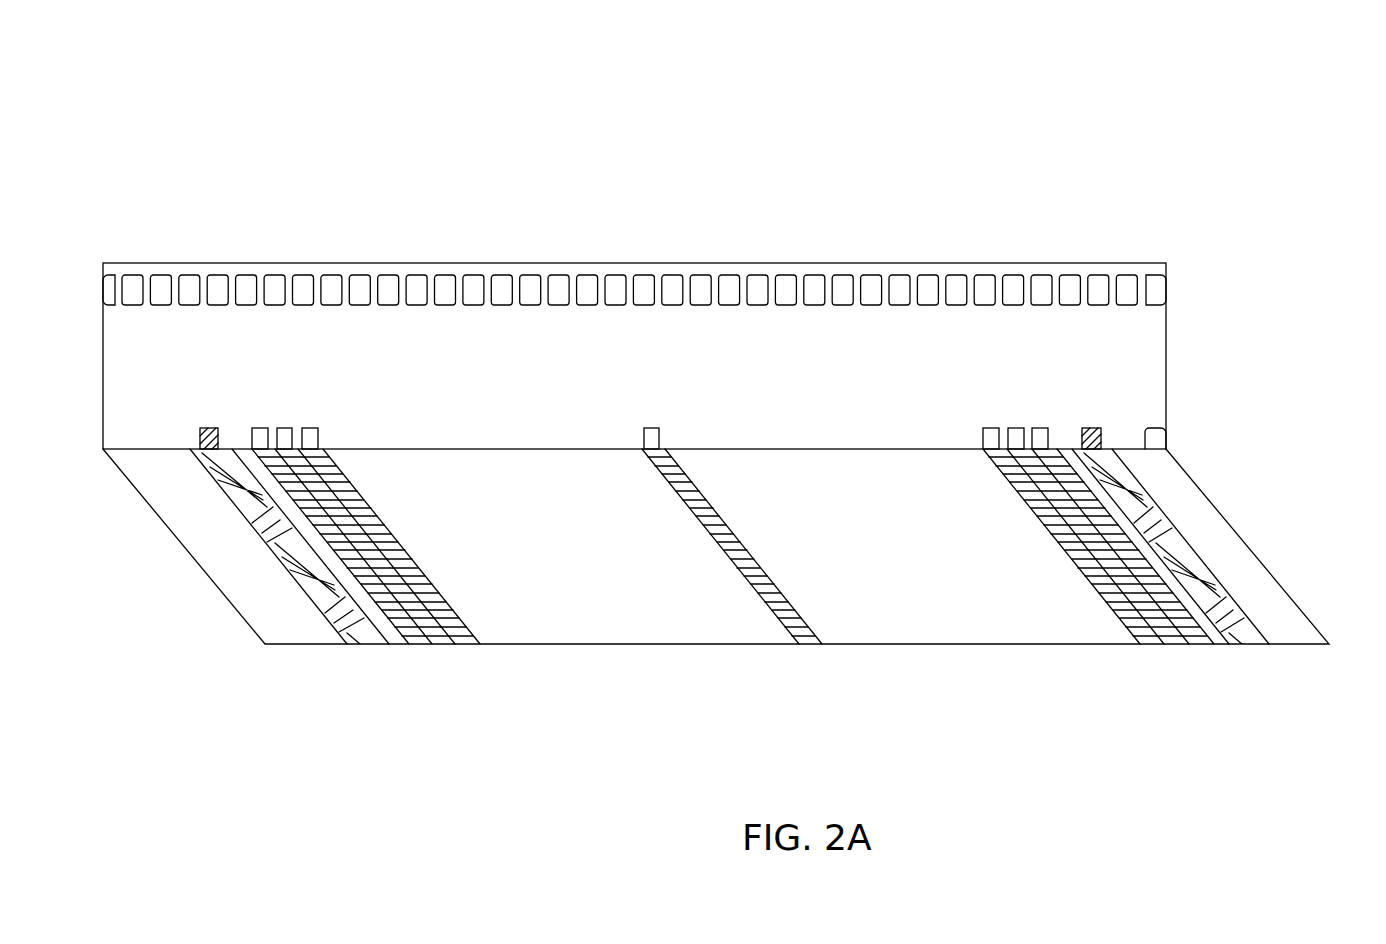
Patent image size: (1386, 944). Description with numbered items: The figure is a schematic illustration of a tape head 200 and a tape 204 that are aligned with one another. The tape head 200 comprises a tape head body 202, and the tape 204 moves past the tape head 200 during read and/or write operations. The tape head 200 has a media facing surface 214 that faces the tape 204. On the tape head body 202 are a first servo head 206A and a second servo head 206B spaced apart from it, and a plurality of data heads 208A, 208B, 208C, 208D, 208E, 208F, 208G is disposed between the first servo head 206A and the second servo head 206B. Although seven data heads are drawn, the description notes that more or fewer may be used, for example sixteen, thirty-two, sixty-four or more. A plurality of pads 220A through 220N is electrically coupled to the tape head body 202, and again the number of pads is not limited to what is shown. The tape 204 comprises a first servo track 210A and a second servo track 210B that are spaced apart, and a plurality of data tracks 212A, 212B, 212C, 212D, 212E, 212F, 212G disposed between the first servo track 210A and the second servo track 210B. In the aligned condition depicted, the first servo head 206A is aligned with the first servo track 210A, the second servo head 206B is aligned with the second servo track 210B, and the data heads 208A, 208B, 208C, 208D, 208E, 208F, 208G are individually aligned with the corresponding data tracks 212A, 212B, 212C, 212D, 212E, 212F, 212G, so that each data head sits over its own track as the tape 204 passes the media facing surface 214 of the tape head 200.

The tape head 200 is at (207, 90).
The tape head body 202 is at (1168, 342).
The tape 204 is at (1268, 565).
The first servo head 206A is at (205, 427).
The second servo head 206B is at (1091, 427).
The data head 208A is at (258, 427).
The data head 208B is at (290, 427).
The data head 208C is at (318, 440).
The data head 208D is at (652, 427).
The data head 208E is at (983, 440).
The data head 208F is at (1012, 427).
The data head 208G is at (1040, 427).
The first servo track 210A is at (373, 648).
The second servo track 210B is at (1255, 648).
The data track 212A is at (425, 648).
The data track 212B is at (455, 648).
The data track 212C is at (480, 648).
The data track 212D is at (810, 648).
The data track 212E is at (1162, 648).
The data track 212F is at (1188, 648).
The data track 212G is at (1207, 648).
The media facing surface 214 is at (1168, 428).
The pad 220A is at (186, 274).
The pad 220N is at (1125, 274).